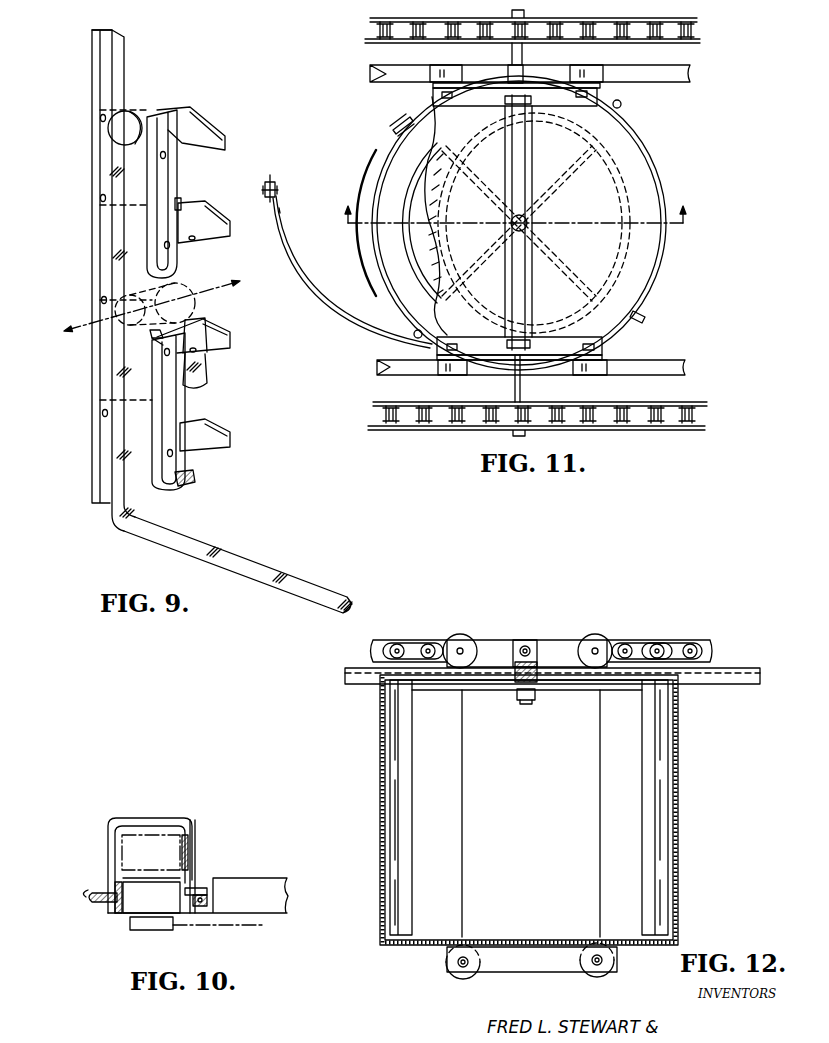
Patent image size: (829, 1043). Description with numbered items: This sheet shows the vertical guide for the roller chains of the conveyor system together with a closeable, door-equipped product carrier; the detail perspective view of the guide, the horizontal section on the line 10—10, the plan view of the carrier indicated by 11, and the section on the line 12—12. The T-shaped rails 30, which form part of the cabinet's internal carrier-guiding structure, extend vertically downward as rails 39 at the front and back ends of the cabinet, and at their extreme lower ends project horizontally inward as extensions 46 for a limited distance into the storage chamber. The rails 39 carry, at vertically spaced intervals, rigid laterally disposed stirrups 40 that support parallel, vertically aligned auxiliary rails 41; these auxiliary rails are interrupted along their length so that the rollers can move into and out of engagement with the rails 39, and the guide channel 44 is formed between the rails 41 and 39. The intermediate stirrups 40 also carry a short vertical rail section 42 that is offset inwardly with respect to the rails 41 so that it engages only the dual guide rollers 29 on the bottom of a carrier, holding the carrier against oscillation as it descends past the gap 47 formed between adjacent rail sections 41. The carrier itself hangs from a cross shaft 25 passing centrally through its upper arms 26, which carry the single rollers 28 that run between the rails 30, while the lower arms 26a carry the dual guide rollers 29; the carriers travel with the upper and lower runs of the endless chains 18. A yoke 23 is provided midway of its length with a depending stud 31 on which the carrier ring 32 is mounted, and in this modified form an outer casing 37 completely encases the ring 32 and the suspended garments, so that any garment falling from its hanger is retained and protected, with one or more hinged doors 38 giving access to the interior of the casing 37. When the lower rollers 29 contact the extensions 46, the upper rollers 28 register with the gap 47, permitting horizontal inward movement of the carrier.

In FIG. 9, the section line 10— 10 is at (143, 298).
In FIG. 9, the Fig. 11 view indicator 11 is at (86, 184).
In FIG. 10, the Fig. 11 view indicator 11 is at (88, 938).
In FIG. 11, the section line 12— 12 is at (517, 220).
In FIG. 11, the endless belts or chains 18 is at (694, 29).
In FIG. 12, the endless belts or chains 18 is at (678, 637).
In FIG. 11, the yoke 23 is at (531, 244).
In FIG. 11, the cross shaft 25 is at (524, 153).
In FIG. 12, the cross shaft 25 is at (530, 645).
In FIG. 11, the upper arms 26 is at (601, 98).
In FIG. 10, the upper arms 26 is at (246, 928).
In FIG. 12, the upper arms 26 is at (495, 648).
In FIG. 12, the lower arms 26a is at (553, 966).
In FIG. 9, the single rollers 28 is at (140, 108).
In FIG. 11, the single rollers 28 is at (588, 74).
In FIG. 12, the single rollers 28 is at (454, 640).
In FIG. 9, the dual guide rollers 29 is at (128, 329).
In FIG. 10, the dual guide rollers 29 is at (161, 840).
In FIG. 12, the dual guide rollers 29 is at (457, 974).
In FIG. 9, the T-shaped rails 30 is at (86, 43).
In FIG. 11, the T-shaped rails 30 is at (385, 75).
In FIG. 12, the T-shaped rails 30 is at (727, 668).
In FIG. 12, the depending stud 31 is at (523, 701).
In FIG. 11, the carrier ring 32 is at (430, 162).
In FIG. 12, the carrier ring 32 is at (474, 689).
In FIG. 11, the outer casing 37 is at (661, 182).
In FIG. 12, the outer casing 37 is at (428, 936).
In FIG. 11, the hinged doors 38 is at (374, 262).
In FIG. 12, the hinged doors 38 is at (384, 803).
In FIG. 9, the vertical rails 39 is at (116, 44).
In FIG. 10, the vertical rails 39 is at (117, 903).
In FIG. 9, the stirrups 40 is at (217, 137).
In FIG. 10, the stirrups 40 is at (134, 818).
In FIG. 9, the auxiliary rails 41 is at (167, 181).
In FIG. 10, the auxiliary rails 41 is at (194, 888).
In FIG. 9, the short vertical rail section 42 is at (195, 318).
In FIG. 10, the short vertical rail section 42 is at (188, 851).
In FIG. 9, the vertical guide channel 44 is at (135, 224).
In FIG. 9, the horizontal extensions 46 is at (237, 560).
In FIG. 10, the horizontal extensions 46 is at (207, 907).
In FIG. 9, the gap 47 is at (163, 334).
In FIG. 10, the gap 47 is at (198, 906).